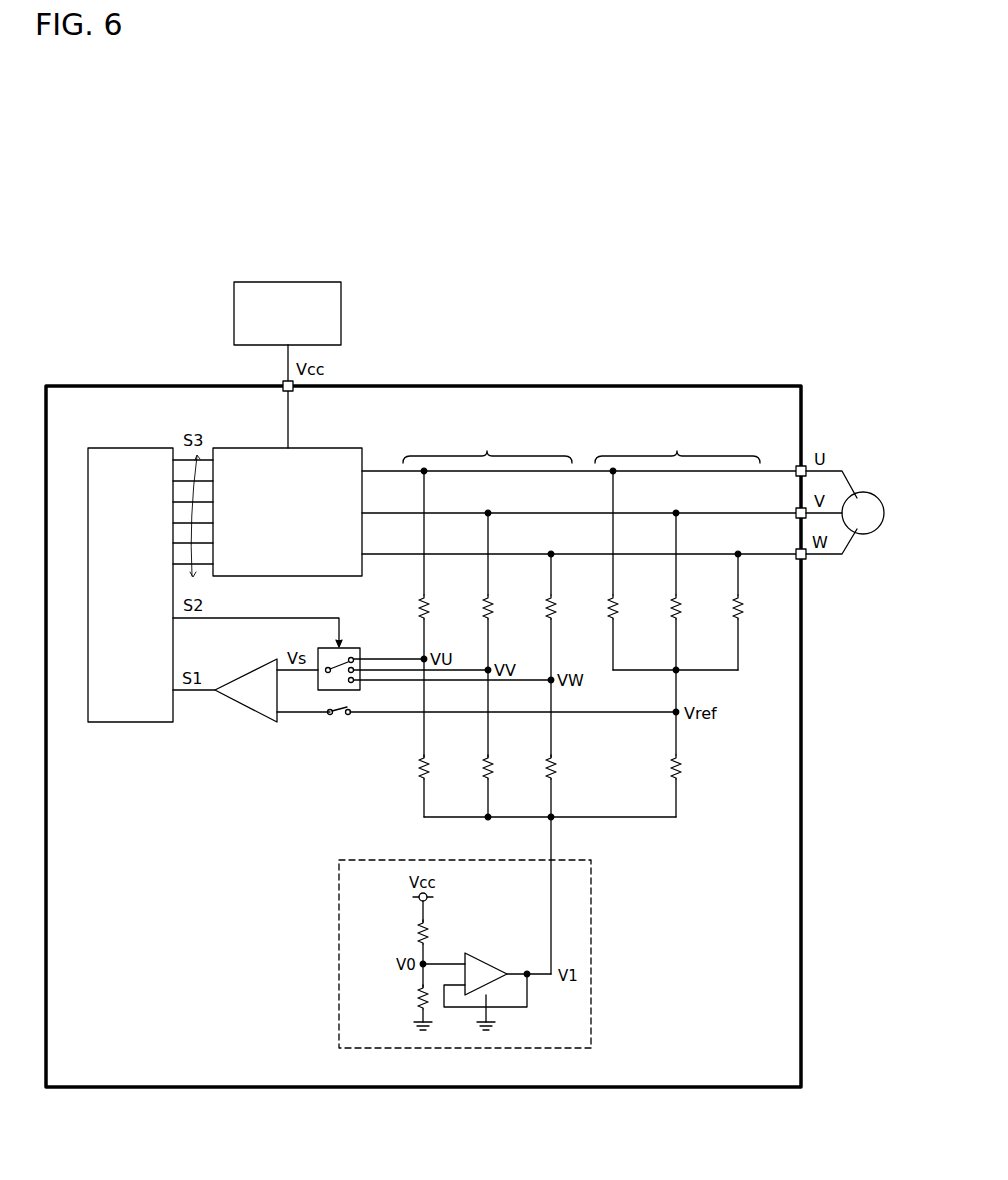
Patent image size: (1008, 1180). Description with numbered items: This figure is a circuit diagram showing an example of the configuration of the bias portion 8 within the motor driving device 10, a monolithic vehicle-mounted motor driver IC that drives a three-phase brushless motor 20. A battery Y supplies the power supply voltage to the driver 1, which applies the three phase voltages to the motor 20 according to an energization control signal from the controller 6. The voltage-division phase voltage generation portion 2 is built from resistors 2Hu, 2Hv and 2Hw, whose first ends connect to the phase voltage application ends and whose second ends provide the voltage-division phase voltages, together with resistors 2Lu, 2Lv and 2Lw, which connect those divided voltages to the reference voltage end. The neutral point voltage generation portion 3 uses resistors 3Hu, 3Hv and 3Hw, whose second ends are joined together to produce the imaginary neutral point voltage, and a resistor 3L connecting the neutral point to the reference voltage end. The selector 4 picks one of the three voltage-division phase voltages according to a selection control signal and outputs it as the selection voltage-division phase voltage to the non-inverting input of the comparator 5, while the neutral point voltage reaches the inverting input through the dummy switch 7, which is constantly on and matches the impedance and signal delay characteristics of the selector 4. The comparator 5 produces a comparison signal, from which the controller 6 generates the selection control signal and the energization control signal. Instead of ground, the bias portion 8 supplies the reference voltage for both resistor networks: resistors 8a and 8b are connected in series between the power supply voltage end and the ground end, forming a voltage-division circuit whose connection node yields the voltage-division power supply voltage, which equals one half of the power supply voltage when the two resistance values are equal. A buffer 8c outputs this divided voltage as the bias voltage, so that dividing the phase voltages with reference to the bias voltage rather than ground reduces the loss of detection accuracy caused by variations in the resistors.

The driver 1 is at (327, 448).
The voltage-division phase voltage generation portion 2 is at (487, 449).
The neutral point voltage generation portion 3 is at (677, 449).
The selector 4 is at (350, 648).
The comparator 5 is at (250, 672).
The controller 6 is at (134, 448).
The dummy switch 7 is at (339, 723).
The bias portion 8 is at (456, 859).
The resistor 8a is at (404, 932).
The resistor 8b is at (404, 997).
The buffer 8c is at (490, 959).
The motor driving device 10 is at (583, 384).
The three-phase brushless motor 20 is at (878, 492).
The resistor 2Hu is at (447, 612).
The resistor 2Hv is at (511, 633).
The resistor 2Hw is at (575, 654).
The resistor 2Lu is at (445, 786).
The resistor 2Lv is at (509, 786).
The resistor 2Lw is at (574, 786).
The resistor 3Hu is at (636, 569).
The resistor 3Hv is at (699, 611).
The resistor 3Hw is at (762, 610).
The resistor 3L is at (692, 765).
The battery Y is at (289, 282).